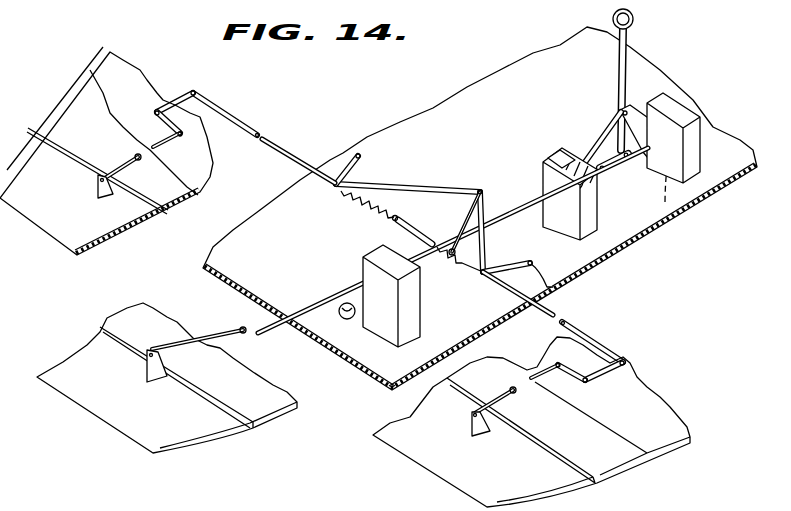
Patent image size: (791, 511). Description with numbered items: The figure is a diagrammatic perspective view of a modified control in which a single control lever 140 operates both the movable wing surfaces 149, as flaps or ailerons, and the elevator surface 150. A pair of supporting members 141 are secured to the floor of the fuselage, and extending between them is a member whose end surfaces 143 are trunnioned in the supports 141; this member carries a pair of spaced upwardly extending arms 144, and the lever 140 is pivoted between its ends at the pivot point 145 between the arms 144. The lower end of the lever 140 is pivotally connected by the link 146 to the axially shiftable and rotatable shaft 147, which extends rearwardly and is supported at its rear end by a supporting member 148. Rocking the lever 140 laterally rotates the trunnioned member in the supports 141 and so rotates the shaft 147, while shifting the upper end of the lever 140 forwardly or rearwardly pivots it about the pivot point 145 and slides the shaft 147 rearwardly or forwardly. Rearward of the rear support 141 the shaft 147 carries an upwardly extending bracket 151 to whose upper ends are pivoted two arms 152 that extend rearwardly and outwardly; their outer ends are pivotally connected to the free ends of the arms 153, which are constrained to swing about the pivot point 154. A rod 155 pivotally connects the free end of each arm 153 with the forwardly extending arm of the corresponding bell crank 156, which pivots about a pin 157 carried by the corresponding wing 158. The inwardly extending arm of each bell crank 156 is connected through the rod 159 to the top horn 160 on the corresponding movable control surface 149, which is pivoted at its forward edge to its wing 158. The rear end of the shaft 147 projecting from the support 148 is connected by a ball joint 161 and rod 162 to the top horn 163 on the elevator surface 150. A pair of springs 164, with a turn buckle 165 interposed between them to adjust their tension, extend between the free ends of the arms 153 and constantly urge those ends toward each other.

The control lever 140 is at (626, 70).
The supporting members 141 is at (690, 140).
The end surfaces 143 is at (657, 178).
The upwardly extending arms 144 is at (618, 122).
The pivot point 145 is at (628, 108).
The link 146 is at (598, 185).
The shaft 147 is at (548, 180).
The supporting member 148 is at (413, 306).
The movable wing surfaces 149 is at (42, 228).
The elevator surface 150 is at (93, 410).
The bracket 151 is at (496, 202).
The arms 152 is at (426, 188).
The arms 153 is at (362, 172).
The pivot point 154 is at (357, 157).
The rod 155 is at (270, 147).
The bell crank 156 is at (178, 97).
The pin 157 is at (157, 110).
The wing 158 is at (80, 78).
The rod 159 is at (116, 165).
The top horn 160 is at (95, 188).
The ball joint 161 is at (352, 298).
The rod 162 is at (237, 308).
The top horn 163 is at (147, 368).
The springs 164 is at (368, 198).
The turn buckle 165 is at (416, 235).